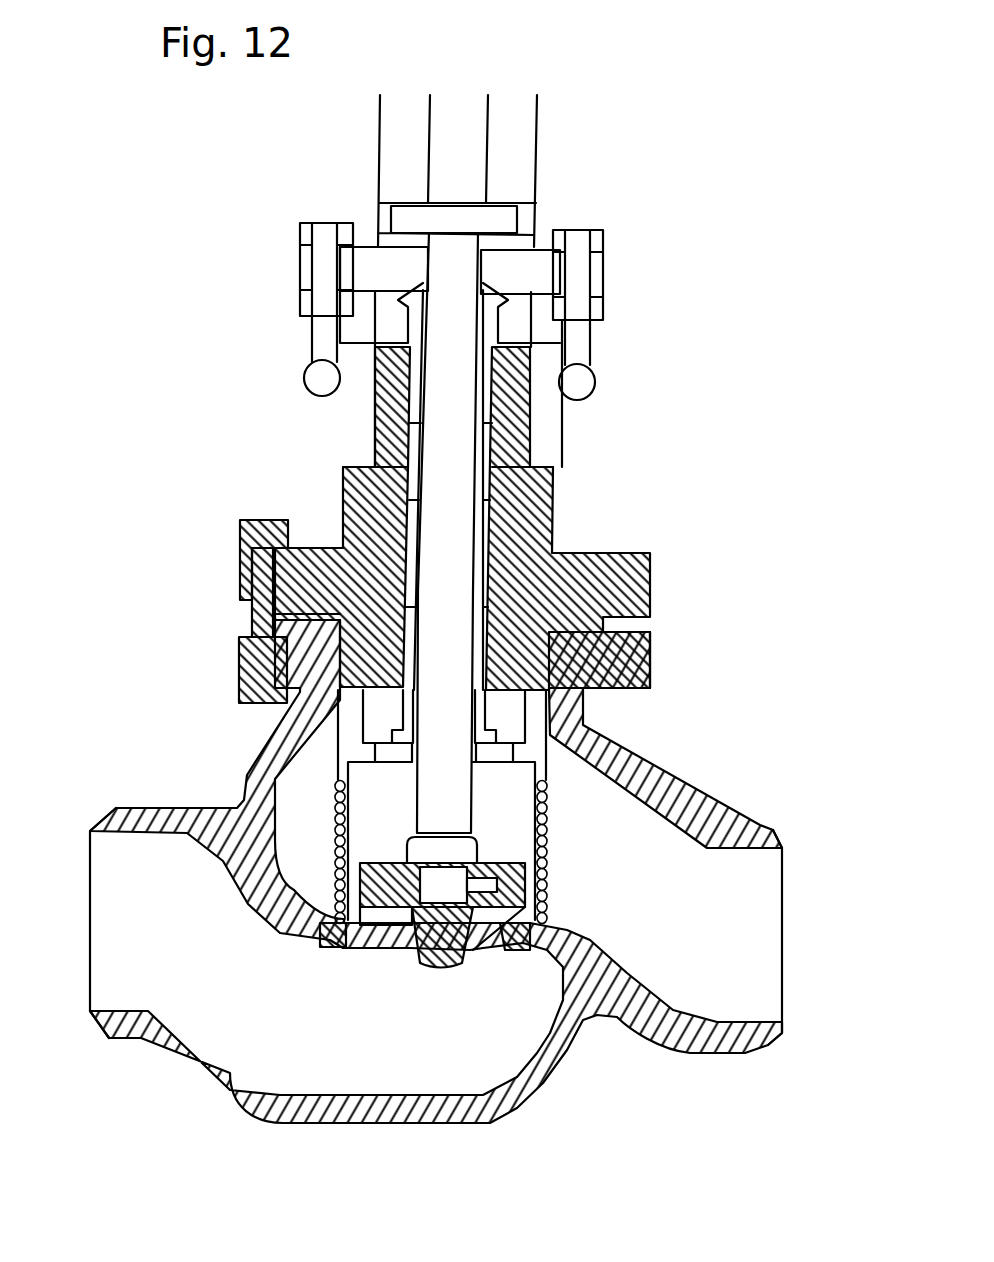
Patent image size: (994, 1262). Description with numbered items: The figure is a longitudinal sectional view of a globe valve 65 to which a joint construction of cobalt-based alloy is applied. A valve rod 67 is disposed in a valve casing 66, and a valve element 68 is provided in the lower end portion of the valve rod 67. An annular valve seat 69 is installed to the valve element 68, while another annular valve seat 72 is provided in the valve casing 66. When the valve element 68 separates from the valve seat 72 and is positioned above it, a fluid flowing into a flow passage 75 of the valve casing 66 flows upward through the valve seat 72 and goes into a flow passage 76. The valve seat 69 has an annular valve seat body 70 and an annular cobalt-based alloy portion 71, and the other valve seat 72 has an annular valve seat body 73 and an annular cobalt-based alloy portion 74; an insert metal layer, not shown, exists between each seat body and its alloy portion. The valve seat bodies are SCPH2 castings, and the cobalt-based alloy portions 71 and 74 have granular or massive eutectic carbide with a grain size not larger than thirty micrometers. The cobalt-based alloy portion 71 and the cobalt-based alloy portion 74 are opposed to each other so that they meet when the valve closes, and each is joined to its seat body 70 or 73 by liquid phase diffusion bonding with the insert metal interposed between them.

The globe valve 65 is at (607, 470).
The valve casing 66 is at (645, 778).
The valve rod 67 is at (440, 483).
The valve element 68 is at (507, 863).
The annular valve seat 69 is at (375, 862).
The annular valve seat body 70 is at (508, 910).
The annular cobalt-based alloy portion 71 is at (503, 917).
The annular valve seat 72 is at (507, 950).
The annular valve seat body 73 is at (347, 950).
The annular cobalt-based alloy portion 74 is at (373, 950).
The flow passage 75 is at (105, 908).
The flow passage 76 is at (777, 908).